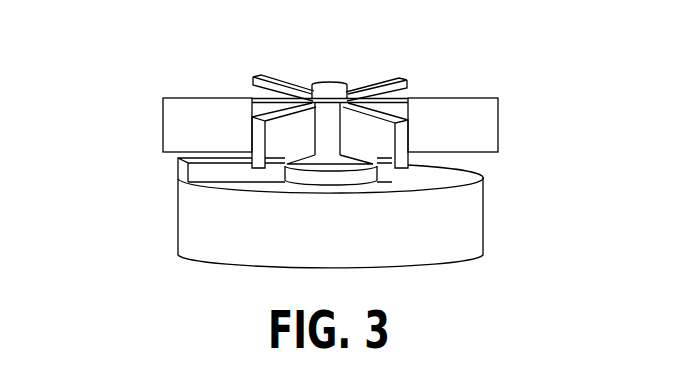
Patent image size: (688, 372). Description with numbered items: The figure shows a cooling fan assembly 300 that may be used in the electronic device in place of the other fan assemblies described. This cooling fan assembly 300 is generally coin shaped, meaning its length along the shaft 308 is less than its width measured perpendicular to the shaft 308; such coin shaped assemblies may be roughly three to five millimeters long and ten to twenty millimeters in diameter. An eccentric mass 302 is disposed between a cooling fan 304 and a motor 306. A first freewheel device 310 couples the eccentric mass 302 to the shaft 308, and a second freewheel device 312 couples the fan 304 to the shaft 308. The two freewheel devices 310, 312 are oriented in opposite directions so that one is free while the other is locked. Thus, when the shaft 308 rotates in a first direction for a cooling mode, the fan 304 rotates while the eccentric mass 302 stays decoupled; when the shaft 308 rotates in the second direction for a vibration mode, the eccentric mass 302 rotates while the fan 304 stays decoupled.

The cooling fan assembly 300 is at (132, 58).
The eccentric mass 302 is at (177, 173).
The cooling fan 304 is at (162, 122).
The motor 306 is at (178, 240).
The shaft 308 is at (330, 90).
The first freewheel device 310 is at (343, 166).
The second freewheel device 312 is at (370, 92).